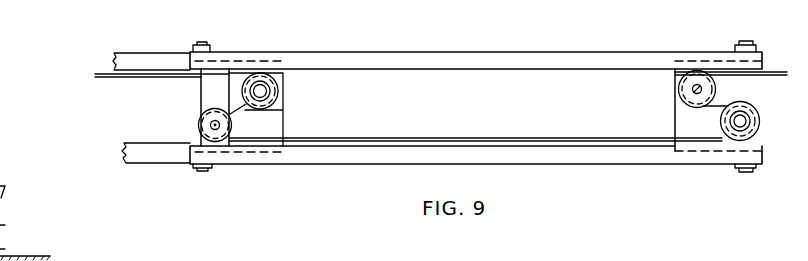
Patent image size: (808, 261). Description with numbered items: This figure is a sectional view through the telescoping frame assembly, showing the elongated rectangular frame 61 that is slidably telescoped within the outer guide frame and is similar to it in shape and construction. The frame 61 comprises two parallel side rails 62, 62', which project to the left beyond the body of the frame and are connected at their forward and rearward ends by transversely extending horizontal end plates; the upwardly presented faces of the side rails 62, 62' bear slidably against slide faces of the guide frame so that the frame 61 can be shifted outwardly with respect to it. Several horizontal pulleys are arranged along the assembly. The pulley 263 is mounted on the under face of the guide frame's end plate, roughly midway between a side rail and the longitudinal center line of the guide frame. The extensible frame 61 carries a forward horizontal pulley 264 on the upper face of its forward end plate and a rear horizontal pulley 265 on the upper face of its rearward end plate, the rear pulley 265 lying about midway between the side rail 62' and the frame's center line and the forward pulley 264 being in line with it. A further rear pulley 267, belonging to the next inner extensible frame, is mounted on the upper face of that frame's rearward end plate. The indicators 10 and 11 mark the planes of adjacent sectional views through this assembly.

The elongated rectangular frame 61 is at (448, 51).
The side rail 62 is at (151, 44).
The side rail 62' is at (156, 177).
The horizontal pulley 263 is at (678, 88).
The forward horizontal pulley 264 is at (198, 122).
The rear horizontal pulley 265 is at (737, 140).
The rear horizontal pulley 267 is at (277, 108).
The section line 10- 10 is at (110, 143).
The section line 11- 11 is at (142, 88).